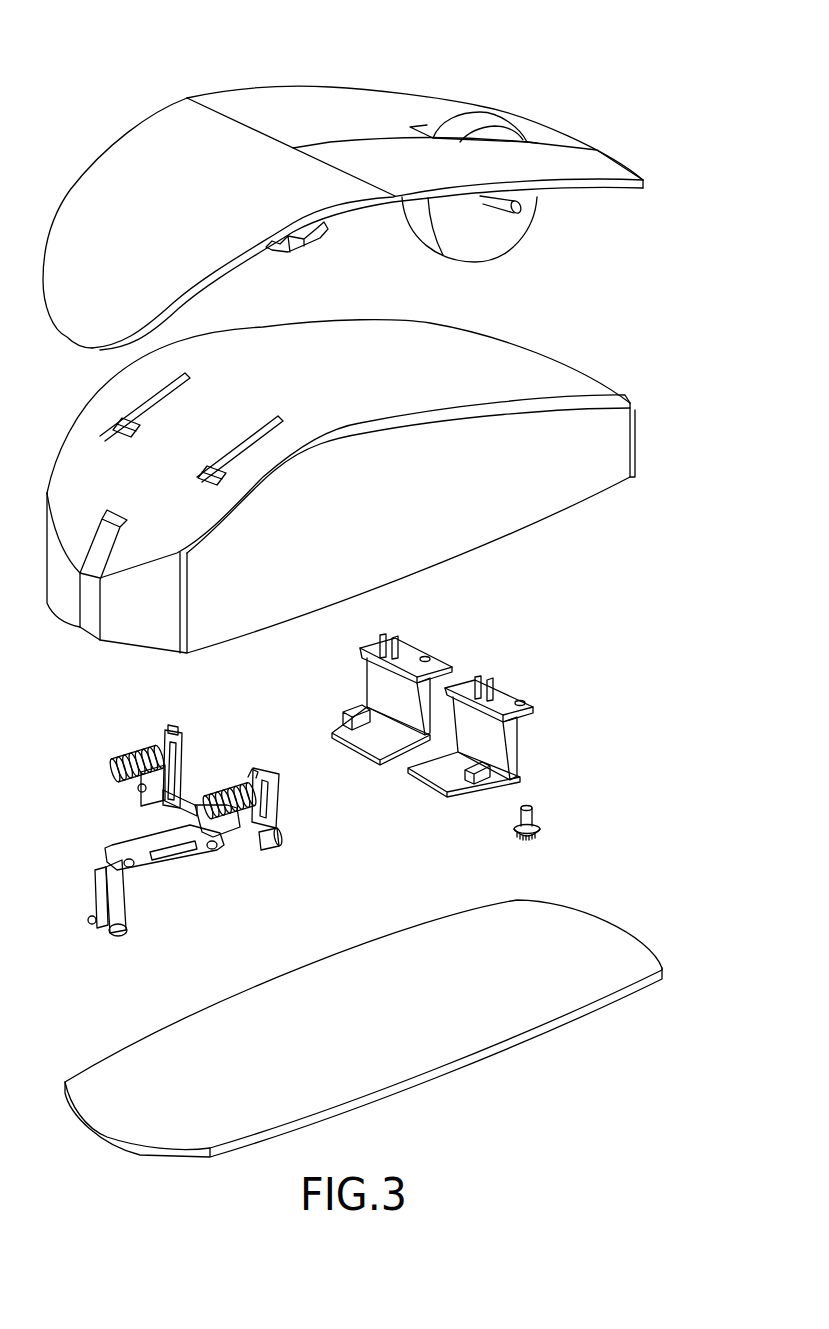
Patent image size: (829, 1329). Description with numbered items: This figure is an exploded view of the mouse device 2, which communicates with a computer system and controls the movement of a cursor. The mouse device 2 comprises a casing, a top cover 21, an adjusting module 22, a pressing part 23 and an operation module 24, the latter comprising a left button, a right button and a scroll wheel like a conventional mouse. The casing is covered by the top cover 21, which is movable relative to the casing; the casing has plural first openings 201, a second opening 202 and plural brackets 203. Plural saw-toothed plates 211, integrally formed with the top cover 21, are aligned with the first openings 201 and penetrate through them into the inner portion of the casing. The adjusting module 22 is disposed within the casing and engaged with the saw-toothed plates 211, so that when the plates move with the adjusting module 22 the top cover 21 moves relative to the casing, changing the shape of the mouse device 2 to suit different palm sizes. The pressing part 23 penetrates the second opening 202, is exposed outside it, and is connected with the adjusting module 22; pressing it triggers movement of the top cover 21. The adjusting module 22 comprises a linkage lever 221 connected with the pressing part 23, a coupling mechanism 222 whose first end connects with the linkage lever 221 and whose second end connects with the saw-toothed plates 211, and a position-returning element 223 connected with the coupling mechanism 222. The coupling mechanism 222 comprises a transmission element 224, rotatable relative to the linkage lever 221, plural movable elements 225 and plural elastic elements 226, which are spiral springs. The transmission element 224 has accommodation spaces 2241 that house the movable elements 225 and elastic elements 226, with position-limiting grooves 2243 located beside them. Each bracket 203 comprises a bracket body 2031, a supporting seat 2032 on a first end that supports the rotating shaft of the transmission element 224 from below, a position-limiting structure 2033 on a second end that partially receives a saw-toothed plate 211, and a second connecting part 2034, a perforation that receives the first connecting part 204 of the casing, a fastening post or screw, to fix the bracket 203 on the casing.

The mouse device 2 is at (143, 33).
The top cover 21 is at (112, 181).
The saw-toothed plates 211 is at (322, 229).
The operation module 24 is at (472, 110).
The first openings 201 is at (117, 431).
The second opening 202 is at (83, 597).
The brackets 203 is at (467, 724).
The bracket body 2031 is at (520, 753).
The supporting seat 2032 is at (453, 785).
The position-limiting structure 2033 is at (493, 682).
The second connecting part 2034 is at (520, 702).
The first connecting part 204 is at (533, 810).
The adjusting module 22 is at (193, 812).
The linkage lever 221 is at (167, 862).
The coupling mechanism 222 is at (156, 824).
The position-returning element 223 is at (130, 742).
The transmission element 224 is at (230, 830).
The movable elements 225 is at (167, 715).
The elastic elements 226 is at (167, 783).
The accommodation spaces 2241 is at (237, 777).
The position-limiting grooves 2243 is at (132, 766).
The pressing part 23 is at (103, 882).